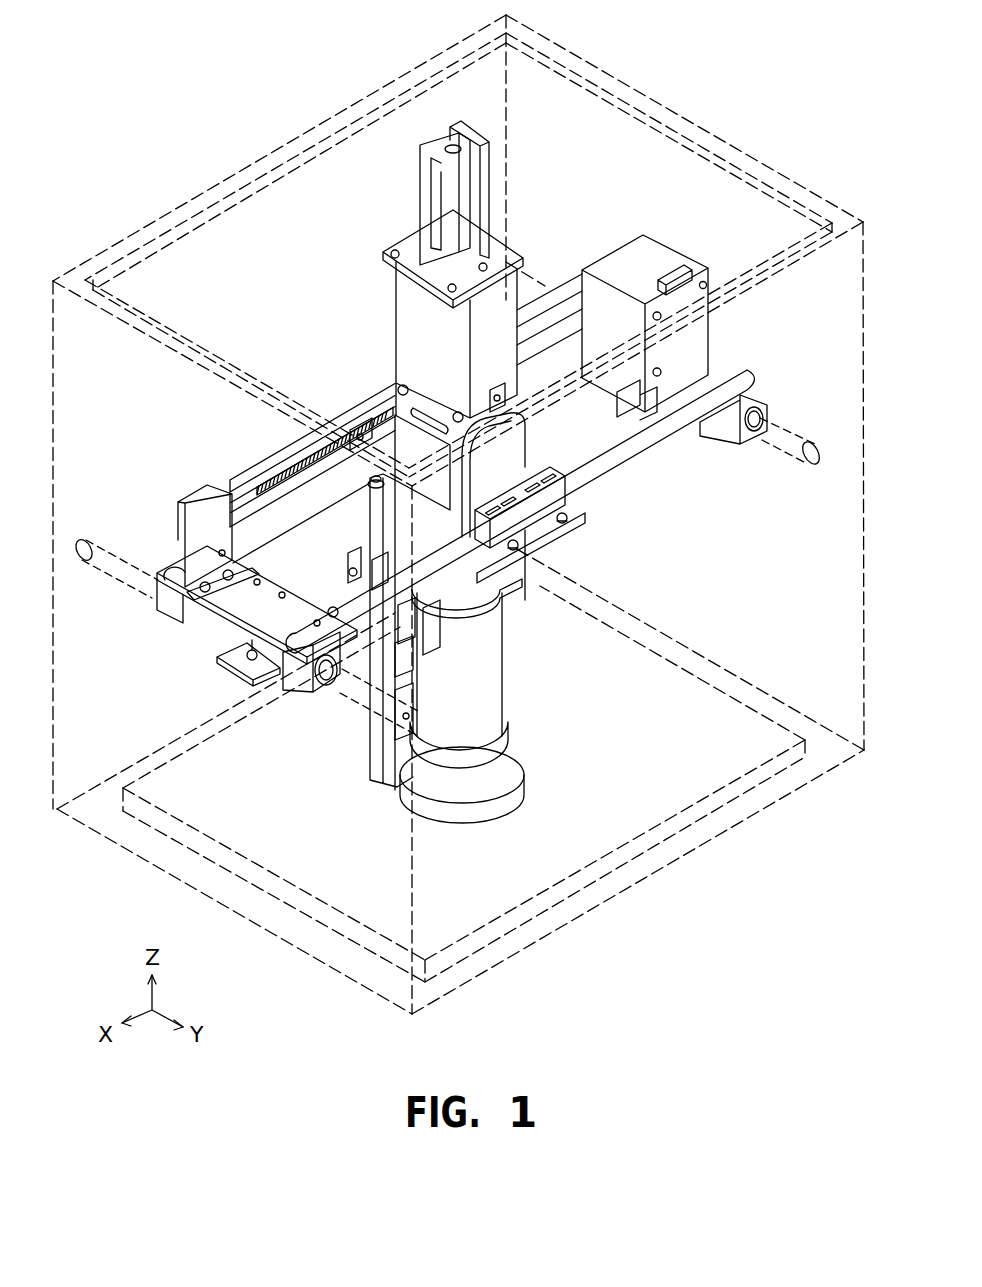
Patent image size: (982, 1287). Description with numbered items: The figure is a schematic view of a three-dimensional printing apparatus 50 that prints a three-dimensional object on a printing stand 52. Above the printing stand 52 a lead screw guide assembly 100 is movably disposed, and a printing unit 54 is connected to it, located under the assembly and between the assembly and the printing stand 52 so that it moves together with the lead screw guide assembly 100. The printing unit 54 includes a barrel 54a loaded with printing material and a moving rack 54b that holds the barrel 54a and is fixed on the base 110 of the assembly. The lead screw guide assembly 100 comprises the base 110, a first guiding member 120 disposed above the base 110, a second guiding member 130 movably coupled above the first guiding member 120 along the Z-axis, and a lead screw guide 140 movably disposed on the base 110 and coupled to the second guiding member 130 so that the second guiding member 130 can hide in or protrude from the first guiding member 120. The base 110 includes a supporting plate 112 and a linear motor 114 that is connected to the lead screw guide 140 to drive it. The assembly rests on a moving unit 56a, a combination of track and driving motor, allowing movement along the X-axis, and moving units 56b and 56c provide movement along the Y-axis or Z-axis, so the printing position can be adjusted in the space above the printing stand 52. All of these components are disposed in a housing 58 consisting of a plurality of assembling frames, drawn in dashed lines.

The 3D printing apparatus 50 is at (779, 998).
The printing stand 52 is at (327, 900).
The printing unit 54 is at (373, 648).
The barrel 54a is at (443, 742).
The moving rack 54b is at (375, 733).
The moving unit 56a is at (237, 487).
The moving unit 56b is at (230, 608).
The moving unit 56c is at (137, 545).
The housing 58 is at (243, 178).
The lead screw guide assembly 100 is at (294, 302).
The base 110 is at (354, 587).
The supporting plate 112 is at (347, 441).
The linear motor 114 is at (347, 430).
The first guiding member 120 is at (405, 311).
The second guiding member 130 is at (421, 190).
The lead screw guide 140 is at (452, 148).